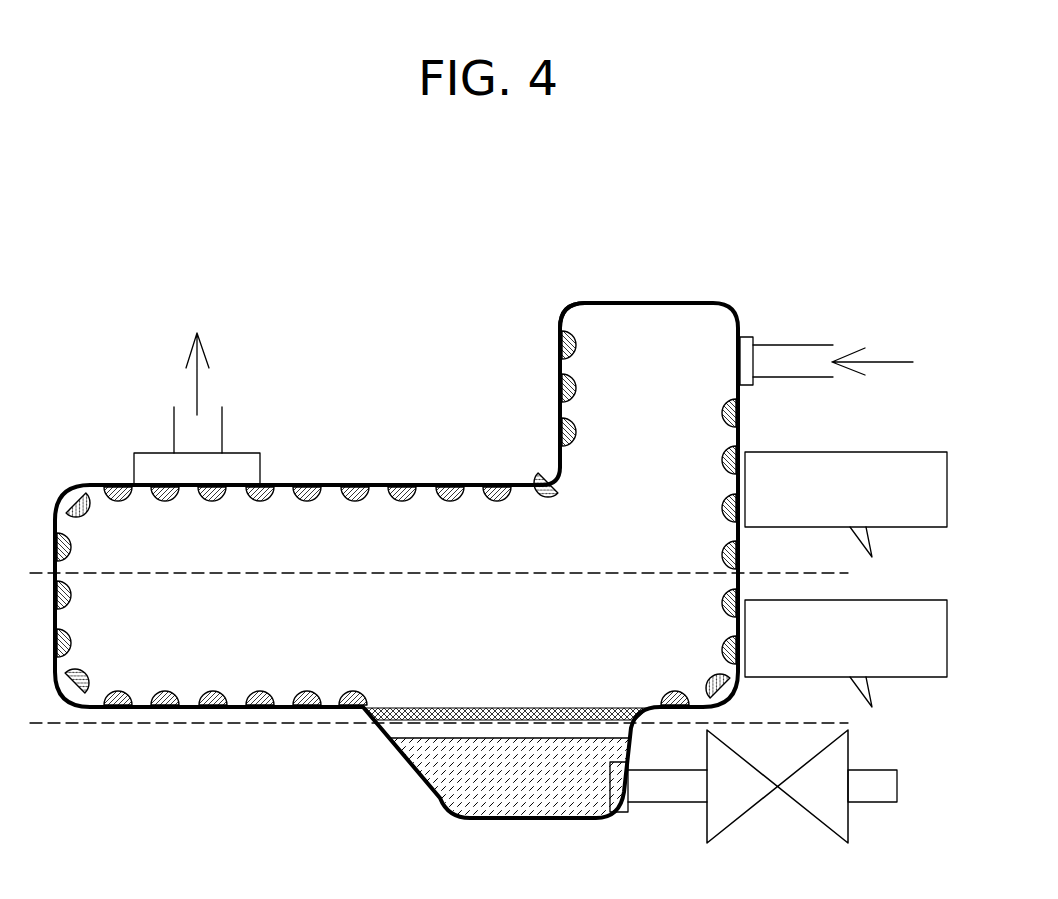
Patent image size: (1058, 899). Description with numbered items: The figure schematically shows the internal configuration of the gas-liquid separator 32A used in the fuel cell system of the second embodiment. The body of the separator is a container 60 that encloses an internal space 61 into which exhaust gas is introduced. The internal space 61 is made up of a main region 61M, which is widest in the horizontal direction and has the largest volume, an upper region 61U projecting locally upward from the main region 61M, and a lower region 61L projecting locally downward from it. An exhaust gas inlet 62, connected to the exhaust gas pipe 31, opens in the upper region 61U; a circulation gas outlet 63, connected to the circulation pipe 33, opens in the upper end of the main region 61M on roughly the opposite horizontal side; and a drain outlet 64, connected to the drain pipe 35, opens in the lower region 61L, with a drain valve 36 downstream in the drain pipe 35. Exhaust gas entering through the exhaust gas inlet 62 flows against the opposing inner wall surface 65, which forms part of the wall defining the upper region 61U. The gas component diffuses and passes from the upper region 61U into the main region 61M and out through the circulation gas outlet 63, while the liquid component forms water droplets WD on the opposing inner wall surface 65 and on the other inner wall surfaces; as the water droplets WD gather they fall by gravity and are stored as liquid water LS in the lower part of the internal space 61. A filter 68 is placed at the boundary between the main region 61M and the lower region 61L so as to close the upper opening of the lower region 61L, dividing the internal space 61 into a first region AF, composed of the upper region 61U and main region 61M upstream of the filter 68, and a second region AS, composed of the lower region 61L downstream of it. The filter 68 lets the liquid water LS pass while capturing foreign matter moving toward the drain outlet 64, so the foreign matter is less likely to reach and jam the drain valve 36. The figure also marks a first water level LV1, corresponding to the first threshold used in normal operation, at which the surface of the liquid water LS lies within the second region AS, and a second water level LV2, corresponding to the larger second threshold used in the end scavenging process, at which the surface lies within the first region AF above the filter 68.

The container 60 is at (637, 302).
The internal space 61 is at (607, 535).
The upper region 61U is at (676, 421).
The main region 61M is at (444, 624).
The lower region 61L is at (510, 791).
The exhaust gas inlet 62 is at (735, 353).
The circulation gas outlet 63 is at (190, 494).
The drain outlet 64 is at (607, 780).
The opposing inner wall surface 65 is at (557, 333).
The filter 68 is at (437, 708).
The exhaust gas pipe 31 is at (775, 343).
The gas-liquid separator 32A is at (383, 357).
The circulation pipe 33 is at (223, 428).
The drain pipe 35 is at (662, 807).
The drain valve 36 is at (745, 815).
The water droplets WD is at (70, 594).
The first region AF is at (499, 670).
The second region AS is at (580, 791).
The liquid water LS is at (440, 772).
The first water level LV1 is at (488, 669).
The second water level LV2 is at (488, 520).